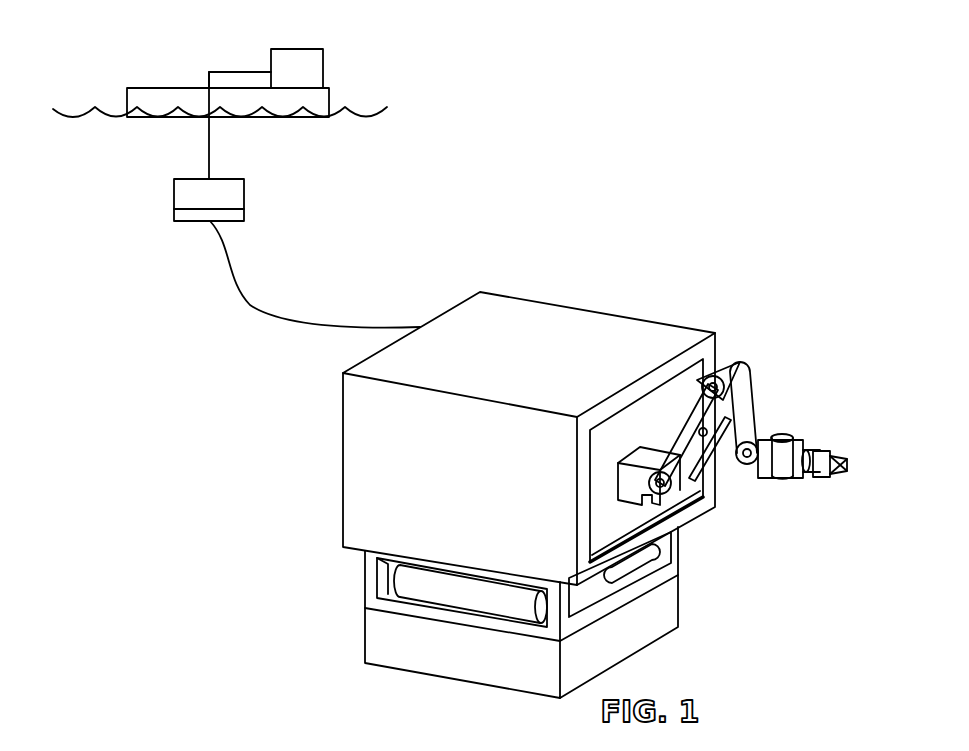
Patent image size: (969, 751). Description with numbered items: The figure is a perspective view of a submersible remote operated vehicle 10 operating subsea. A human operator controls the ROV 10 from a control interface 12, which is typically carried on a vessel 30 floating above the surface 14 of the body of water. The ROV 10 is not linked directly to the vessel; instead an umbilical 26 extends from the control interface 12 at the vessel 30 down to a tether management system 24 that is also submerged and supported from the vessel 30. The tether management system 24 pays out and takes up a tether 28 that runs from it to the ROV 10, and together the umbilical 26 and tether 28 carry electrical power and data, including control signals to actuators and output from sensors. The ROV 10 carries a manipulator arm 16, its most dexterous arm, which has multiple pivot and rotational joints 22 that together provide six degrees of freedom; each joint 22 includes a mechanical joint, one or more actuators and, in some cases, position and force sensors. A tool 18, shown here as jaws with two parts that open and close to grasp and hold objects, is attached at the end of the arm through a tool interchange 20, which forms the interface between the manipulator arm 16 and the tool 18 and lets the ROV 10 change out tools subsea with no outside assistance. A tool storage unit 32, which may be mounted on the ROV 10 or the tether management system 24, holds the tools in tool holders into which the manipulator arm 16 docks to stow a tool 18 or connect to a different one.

The submersible remote operated vehicle (ROV) 10 is at (538, 296).
The control interface 12 is at (297, 68).
The surface of a body of water 14 is at (368, 112).
The manipulator arm 16 is at (744, 449).
The tool 18 is at (830, 448).
The tool interchange 20 is at (795, 474).
The joints 22 is at (667, 447).
The tether management system (TMS) 24 is at (209, 200).
The umbilical 26 is at (210, 153).
The tether 28 is at (300, 318).
The vessel 30 is at (148, 102).
The tool storage unit 32 is at (233, 215).